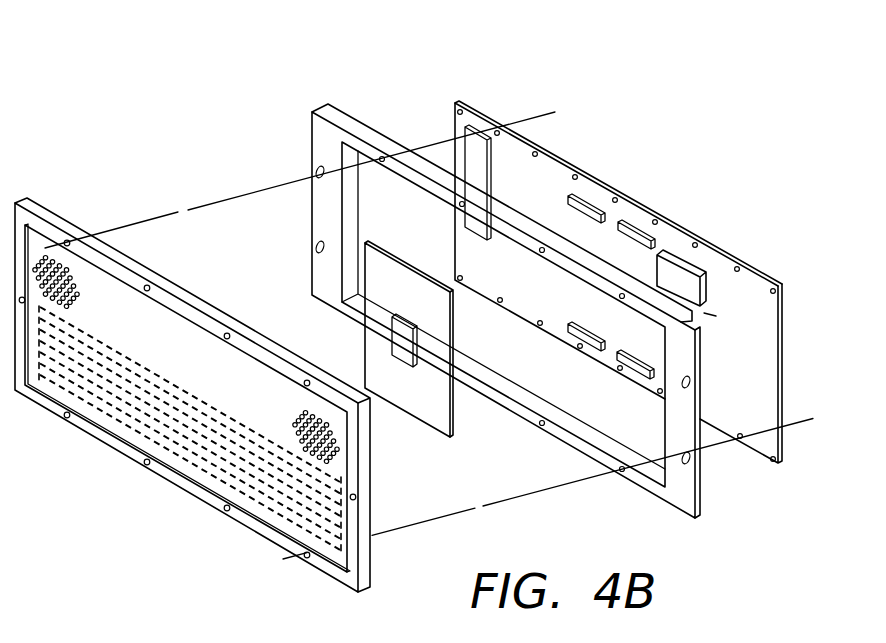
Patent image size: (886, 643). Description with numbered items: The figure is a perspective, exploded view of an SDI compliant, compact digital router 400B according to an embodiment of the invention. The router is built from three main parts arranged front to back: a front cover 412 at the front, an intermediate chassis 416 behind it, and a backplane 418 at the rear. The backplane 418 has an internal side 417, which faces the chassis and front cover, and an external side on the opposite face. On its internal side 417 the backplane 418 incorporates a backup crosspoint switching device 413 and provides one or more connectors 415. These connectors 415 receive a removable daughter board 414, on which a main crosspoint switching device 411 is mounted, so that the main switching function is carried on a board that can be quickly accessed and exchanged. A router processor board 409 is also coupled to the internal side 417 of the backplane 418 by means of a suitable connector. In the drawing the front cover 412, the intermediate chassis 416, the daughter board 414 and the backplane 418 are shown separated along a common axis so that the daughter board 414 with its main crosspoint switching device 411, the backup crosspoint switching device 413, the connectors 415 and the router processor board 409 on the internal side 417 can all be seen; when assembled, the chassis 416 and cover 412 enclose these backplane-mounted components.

The compact digital router 400B is at (238, 144).
The front cover 412 is at (63, 227).
The intermediate chassis 416 is at (369, 140).
The backplane 418 is at (497, 126).
The internal side 417 is at (753, 309).
The router processor board 409 is at (472, 153).
The main crosspoint switching device 411 is at (395, 279).
The removable daughter board 414 is at (398, 363).
The connectors 415 is at (630, 223).
The backup crosspoint switching device 413 is at (690, 282).